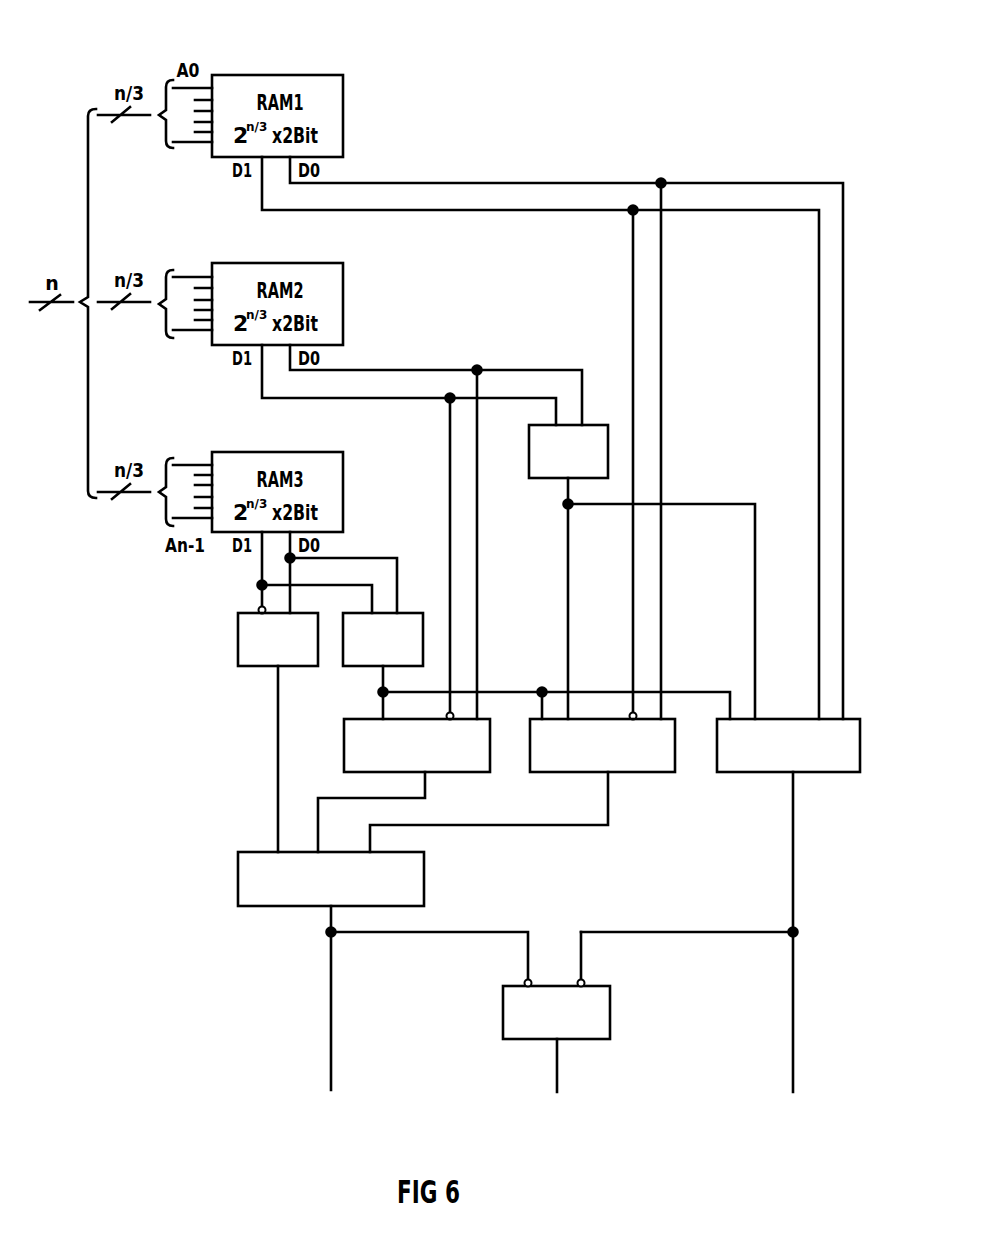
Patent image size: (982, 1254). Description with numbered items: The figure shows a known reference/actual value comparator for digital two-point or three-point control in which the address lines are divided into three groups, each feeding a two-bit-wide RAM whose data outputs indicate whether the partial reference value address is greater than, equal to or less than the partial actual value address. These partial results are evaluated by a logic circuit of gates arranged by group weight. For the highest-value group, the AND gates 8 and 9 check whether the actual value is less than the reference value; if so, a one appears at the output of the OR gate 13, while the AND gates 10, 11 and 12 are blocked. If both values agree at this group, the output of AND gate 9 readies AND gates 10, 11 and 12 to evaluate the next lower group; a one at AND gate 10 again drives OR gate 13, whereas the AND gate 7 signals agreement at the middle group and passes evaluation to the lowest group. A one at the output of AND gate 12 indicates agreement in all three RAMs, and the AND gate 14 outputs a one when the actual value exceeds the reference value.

The AND gate 7 is at (529, 455).
The AND gate 8 is at (238, 636).
The AND gate 9 is at (410, 613).
The AND gate 10 is at (453, 772).
The AND gate 11 is at (636, 772).
The AND gate 12 is at (825, 772).
The OR gate 13 is at (424, 873).
The AND gate 14 is at (503, 1020).